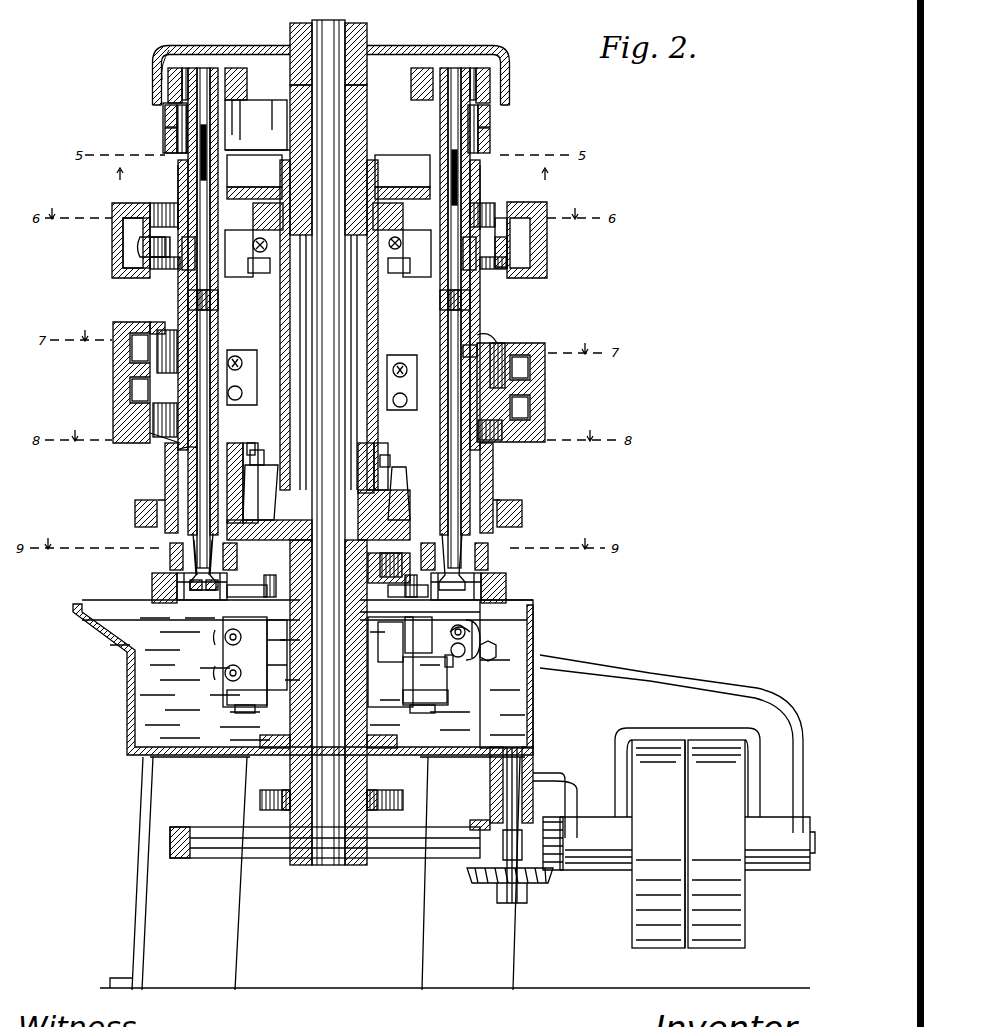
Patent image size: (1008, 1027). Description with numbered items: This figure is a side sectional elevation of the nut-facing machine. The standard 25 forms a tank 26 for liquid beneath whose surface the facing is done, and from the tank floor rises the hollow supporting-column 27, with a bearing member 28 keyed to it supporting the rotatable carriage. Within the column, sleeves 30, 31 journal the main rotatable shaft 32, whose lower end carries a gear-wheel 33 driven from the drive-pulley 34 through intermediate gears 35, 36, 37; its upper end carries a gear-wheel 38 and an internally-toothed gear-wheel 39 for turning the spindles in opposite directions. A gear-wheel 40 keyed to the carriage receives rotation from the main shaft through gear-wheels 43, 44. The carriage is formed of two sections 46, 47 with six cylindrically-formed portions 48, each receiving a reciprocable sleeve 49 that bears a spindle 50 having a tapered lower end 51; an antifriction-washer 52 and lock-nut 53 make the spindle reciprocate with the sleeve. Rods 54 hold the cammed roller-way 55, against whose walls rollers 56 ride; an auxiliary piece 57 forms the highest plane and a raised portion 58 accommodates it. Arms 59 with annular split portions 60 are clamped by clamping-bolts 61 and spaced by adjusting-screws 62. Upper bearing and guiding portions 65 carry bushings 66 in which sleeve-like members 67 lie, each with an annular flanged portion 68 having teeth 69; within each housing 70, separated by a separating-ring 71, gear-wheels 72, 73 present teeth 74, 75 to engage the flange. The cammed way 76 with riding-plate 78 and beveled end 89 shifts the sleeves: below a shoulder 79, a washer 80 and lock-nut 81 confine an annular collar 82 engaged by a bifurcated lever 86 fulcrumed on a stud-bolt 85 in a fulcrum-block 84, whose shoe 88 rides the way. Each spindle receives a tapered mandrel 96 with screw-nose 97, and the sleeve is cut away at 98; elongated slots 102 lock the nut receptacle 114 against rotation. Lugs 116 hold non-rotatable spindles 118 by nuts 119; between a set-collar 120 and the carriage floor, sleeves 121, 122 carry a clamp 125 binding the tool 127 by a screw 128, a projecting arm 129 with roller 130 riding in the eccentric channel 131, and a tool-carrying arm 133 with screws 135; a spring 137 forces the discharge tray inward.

The standard 25 is at (127, 708).
The tank 26 is at (528, 615).
The hollow supporting-column 27 is at (280, 738).
The bearing member 28 is at (395, 565).
The sleeve 30 is at (350, 140).
The sleeve 31 is at (390, 738).
The main rotatable shaft 32 is at (336, 865).
The gear-wheel 33 is at (392, 850).
The drive-pulley 34 is at (665, 950).
The intermediate gear 35 is at (565, 843).
The intermediate gear 36 is at (540, 883).
The intermediate gear 37 is at (470, 825).
The gear-wheel 38 is at (262, 140).
The internally-toothed gear-wheel 39 is at (165, 100).
The gear-wheel 40 is at (522, 508).
The gear-wheel 43 is at (375, 790).
The gear-wheel 44 is at (270, 790).
The carriage section 46 is at (328, 171).
The carriage section 47 is at (320, 491).
The cylindrically-formed portion 48 is at (495, 470).
The reciprocable sleeve 49 is at (472, 308).
The spindle 50 is at (465, 460).
The tapered lower end 51 is at (488, 555).
The antifriction-washer 52 is at (445, 310).
The lock-nut 53 is at (464, 300).
The rods 54 is at (506, 584).
The cammed roller-way 55 is at (545, 395).
The rollers 56 is at (545, 412).
The auxiliary piece 57 is at (153, 420).
The raised portion 58 is at (113, 330).
The arms 59 is at (500, 345).
The annular split portion 60 is at (492, 330).
The clamping-bolt 61 is at (322, 383).
The adjusting-screw 62 is at (545, 375).
The bearing and guiding portion 65 is at (478, 176).
The antifriction metallic bushing 66 is at (482, 163).
The sleeve-like member 67 is at (331, 218).
The annular flanged portion 68 is at (492, 115).
The teeth 69 is at (495, 105).
The cylindrically-formed housing 70 is at (435, 68).
The separating-ring 71 is at (492, 100).
The gear-wheel 72 is at (487, 75).
The gear-wheel 73 is at (492, 140).
The teeth 74 is at (490, 78).
The teeth 75 is at (492, 127).
The cammed way 76 is at (547, 210).
The riding-plate 78 is at (112, 215).
The shoulder 79 is at (512, 192).
The washer 80 is at (505, 272).
The lock-nut 81 is at (327, 260).
The annular collar 82 is at (138, 247).
The fulcrum-block 84 is at (392, 182).
The stud-bolt 85 is at (329, 264).
The bifurcated lever 86 is at (150, 240).
The shoe 88 is at (547, 228).
The beveled end 89 is at (507, 256).
The tapered mandrel 96 is at (177, 580).
The screw-nose 97 is at (225, 615).
The cut-away portion 98 is at (490, 575).
The elongated slots 102 is at (190, 586).
The nut receptacle 114 is at (304, 621).
The lug 116 is at (260, 485).
The non-rotatable spindle 118 is at (240, 707).
The nut 119 is at (255, 468).
The set-collar 120 is at (448, 697).
The sleeve 121 is at (222, 630).
The sleeve 122 is at (466, 658).
The split hollow cylindrical clamp 125 is at (482, 635).
The tool 127 is at (417, 642).
The screw 128 is at (492, 662).
The projecting arm 129 is at (318, 578).
The roller 130 is at (258, 593).
The channel 131 is at (409, 593).
The tool-carrying arm 133 is at (403, 680).
The screws 135 is at (461, 667).
The spring 137 is at (270, 670).